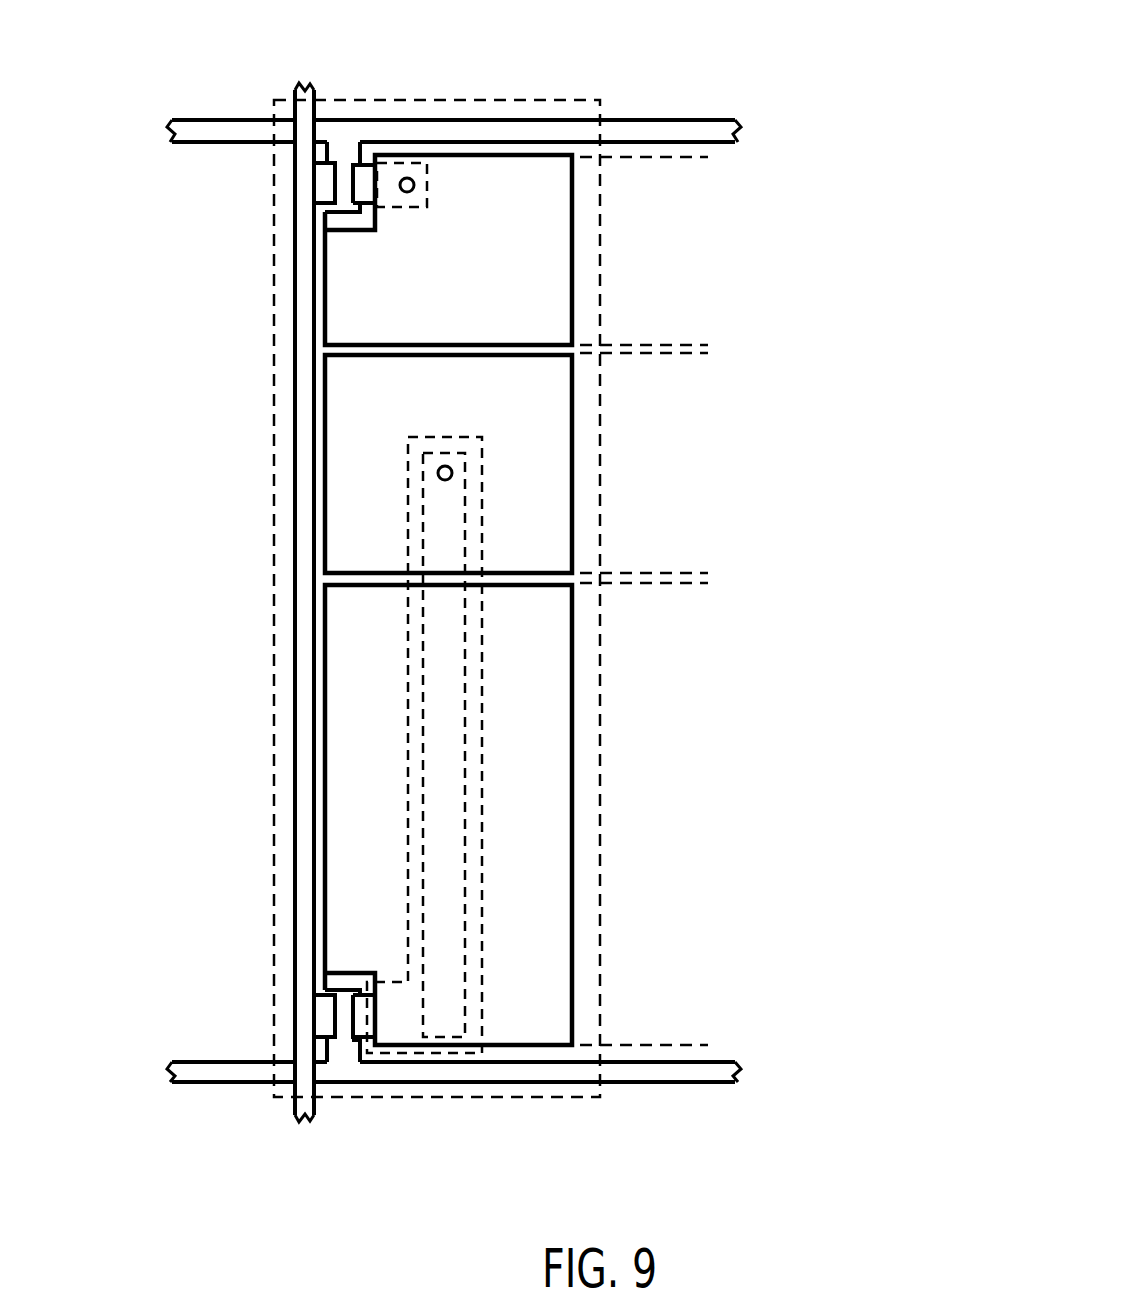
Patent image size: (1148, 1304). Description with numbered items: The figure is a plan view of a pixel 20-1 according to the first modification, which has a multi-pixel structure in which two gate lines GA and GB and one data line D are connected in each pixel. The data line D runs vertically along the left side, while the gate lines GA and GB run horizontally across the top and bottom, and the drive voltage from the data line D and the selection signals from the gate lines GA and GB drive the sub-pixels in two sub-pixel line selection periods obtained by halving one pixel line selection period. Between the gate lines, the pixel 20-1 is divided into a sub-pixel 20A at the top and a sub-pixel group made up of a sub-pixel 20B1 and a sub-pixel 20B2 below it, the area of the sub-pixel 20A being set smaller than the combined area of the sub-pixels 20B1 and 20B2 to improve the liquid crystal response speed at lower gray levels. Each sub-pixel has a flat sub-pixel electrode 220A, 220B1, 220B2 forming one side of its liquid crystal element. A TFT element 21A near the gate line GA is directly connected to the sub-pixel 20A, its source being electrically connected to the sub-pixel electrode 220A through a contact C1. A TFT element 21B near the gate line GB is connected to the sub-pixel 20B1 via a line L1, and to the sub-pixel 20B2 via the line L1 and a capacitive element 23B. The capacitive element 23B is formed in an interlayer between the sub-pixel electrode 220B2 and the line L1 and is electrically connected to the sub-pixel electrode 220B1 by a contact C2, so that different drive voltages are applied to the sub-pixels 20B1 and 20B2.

The data line D is at (295, 116).
The gate line GA is at (666, 120).
The gate line GB is at (662, 1083).
The pixel 20-1 is at (535, 95).
The TFT element 21A is at (312, 190).
The TFT element 21B is at (312, 1023).
The contact C1 is at (407, 178).
The contact C2 is at (438, 473).
The sub-pixel electrode 220A is at (572, 190).
The sub-pixel electrode 220B1 is at (572, 415).
The sub-pixel electrode 220B2 is at (572, 882).
The sub-pixel 20A is at (717, 158).
The sub-pixel 20B1 is at (717, 358).
The sub-pixel 20B2 is at (717, 586).
The capacitive element 23B is at (408, 630).
The line L1 is at (445, 792).